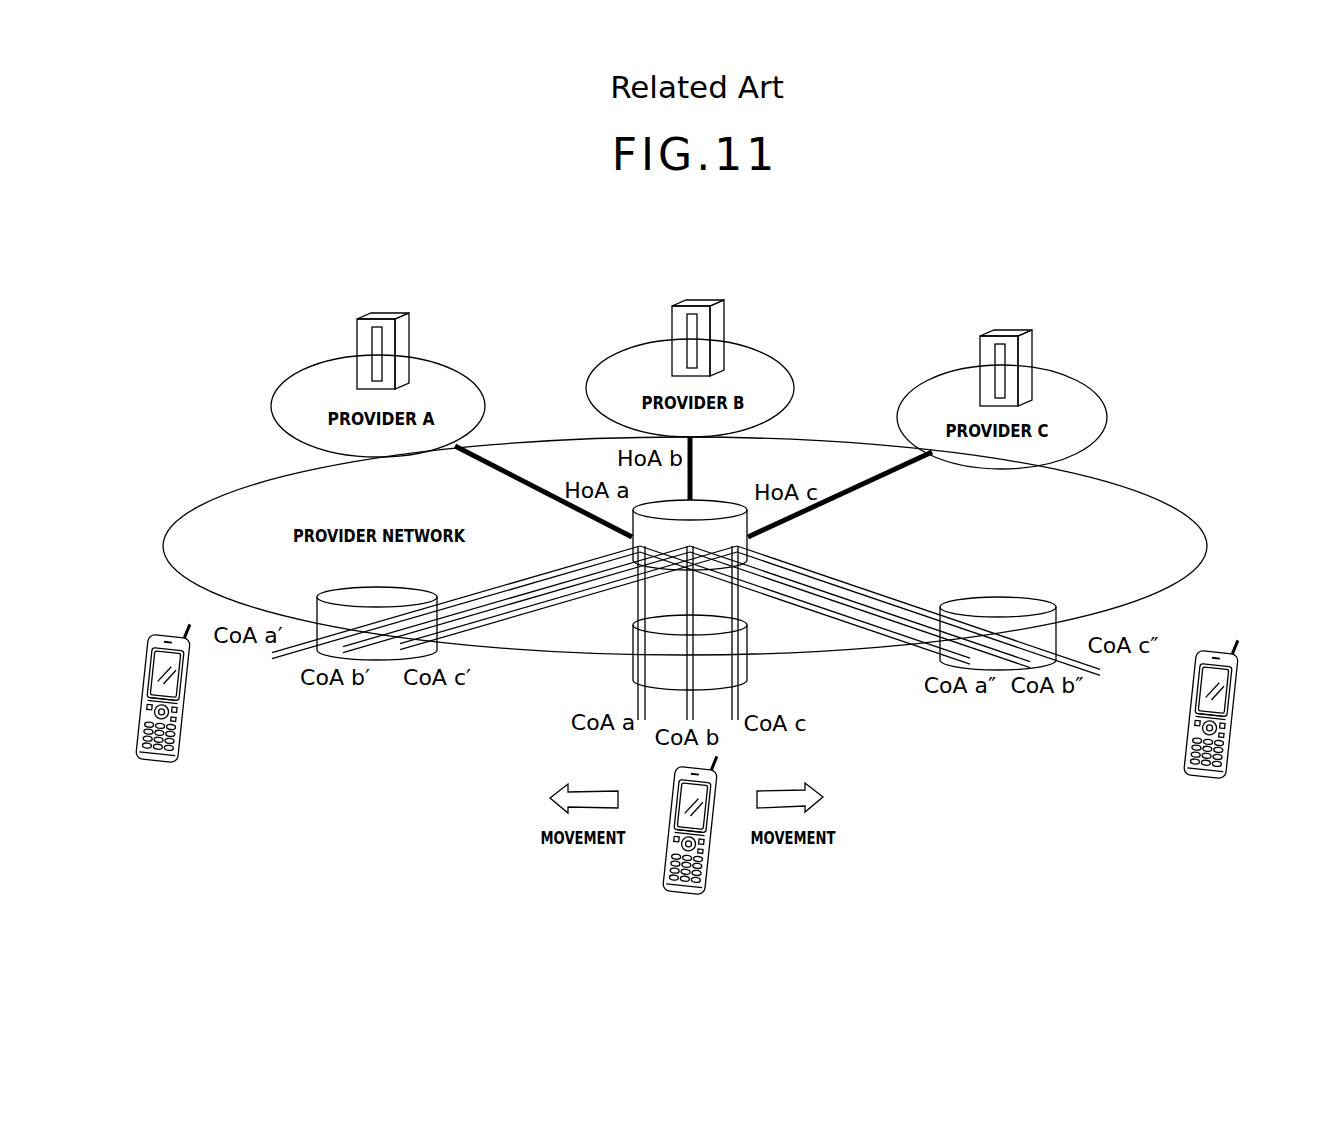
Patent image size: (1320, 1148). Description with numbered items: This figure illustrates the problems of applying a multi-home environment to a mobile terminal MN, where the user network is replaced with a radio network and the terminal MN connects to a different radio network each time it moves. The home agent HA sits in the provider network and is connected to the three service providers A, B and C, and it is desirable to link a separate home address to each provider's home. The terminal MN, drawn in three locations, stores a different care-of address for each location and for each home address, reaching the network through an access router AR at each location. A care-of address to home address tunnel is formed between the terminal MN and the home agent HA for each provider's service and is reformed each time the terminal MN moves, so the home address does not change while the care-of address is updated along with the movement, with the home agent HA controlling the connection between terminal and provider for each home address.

The home agent HA is at (690, 535).
The access router AR is at (686, 637).
The mobile terminal MN is at (702, 775).